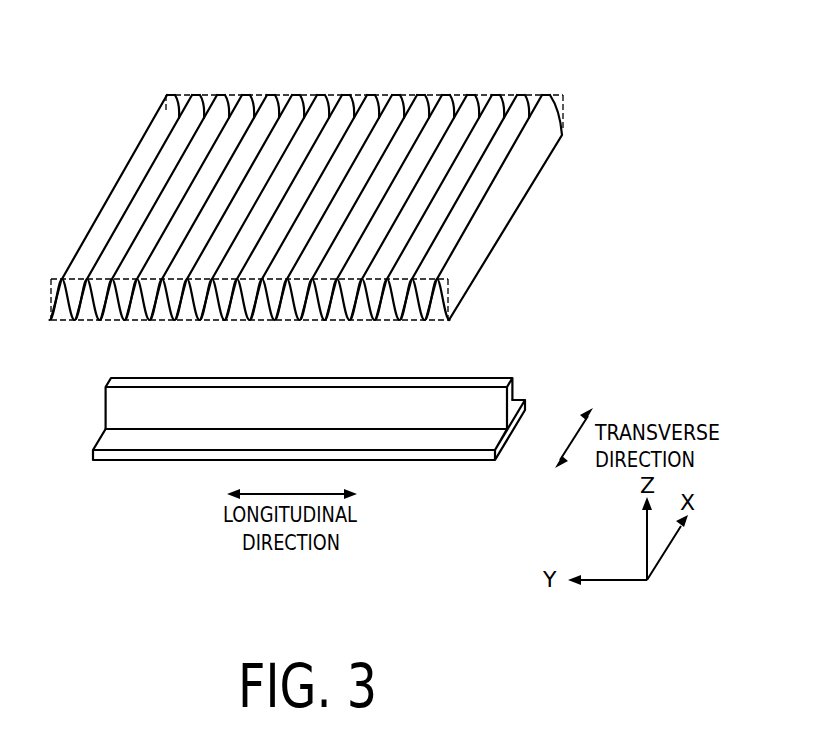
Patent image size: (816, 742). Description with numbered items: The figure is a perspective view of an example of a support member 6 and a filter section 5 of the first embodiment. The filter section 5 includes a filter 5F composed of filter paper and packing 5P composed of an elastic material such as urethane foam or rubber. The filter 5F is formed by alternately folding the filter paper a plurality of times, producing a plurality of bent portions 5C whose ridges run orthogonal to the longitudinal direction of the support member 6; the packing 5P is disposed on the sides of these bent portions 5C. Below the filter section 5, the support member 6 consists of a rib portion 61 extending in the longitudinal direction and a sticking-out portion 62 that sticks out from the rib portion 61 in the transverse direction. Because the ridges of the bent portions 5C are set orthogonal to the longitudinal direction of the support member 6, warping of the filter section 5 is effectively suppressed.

The filter section 5 is at (339, 166).
The bent portions 5C is at (242, 98).
The packing 5P is at (563, 113).
The filter 5F is at (501, 211).
The support member 6 is at (332, 430).
The rib portion 61 is at (463, 381).
The sticking-out portion 62 is at (438, 437).